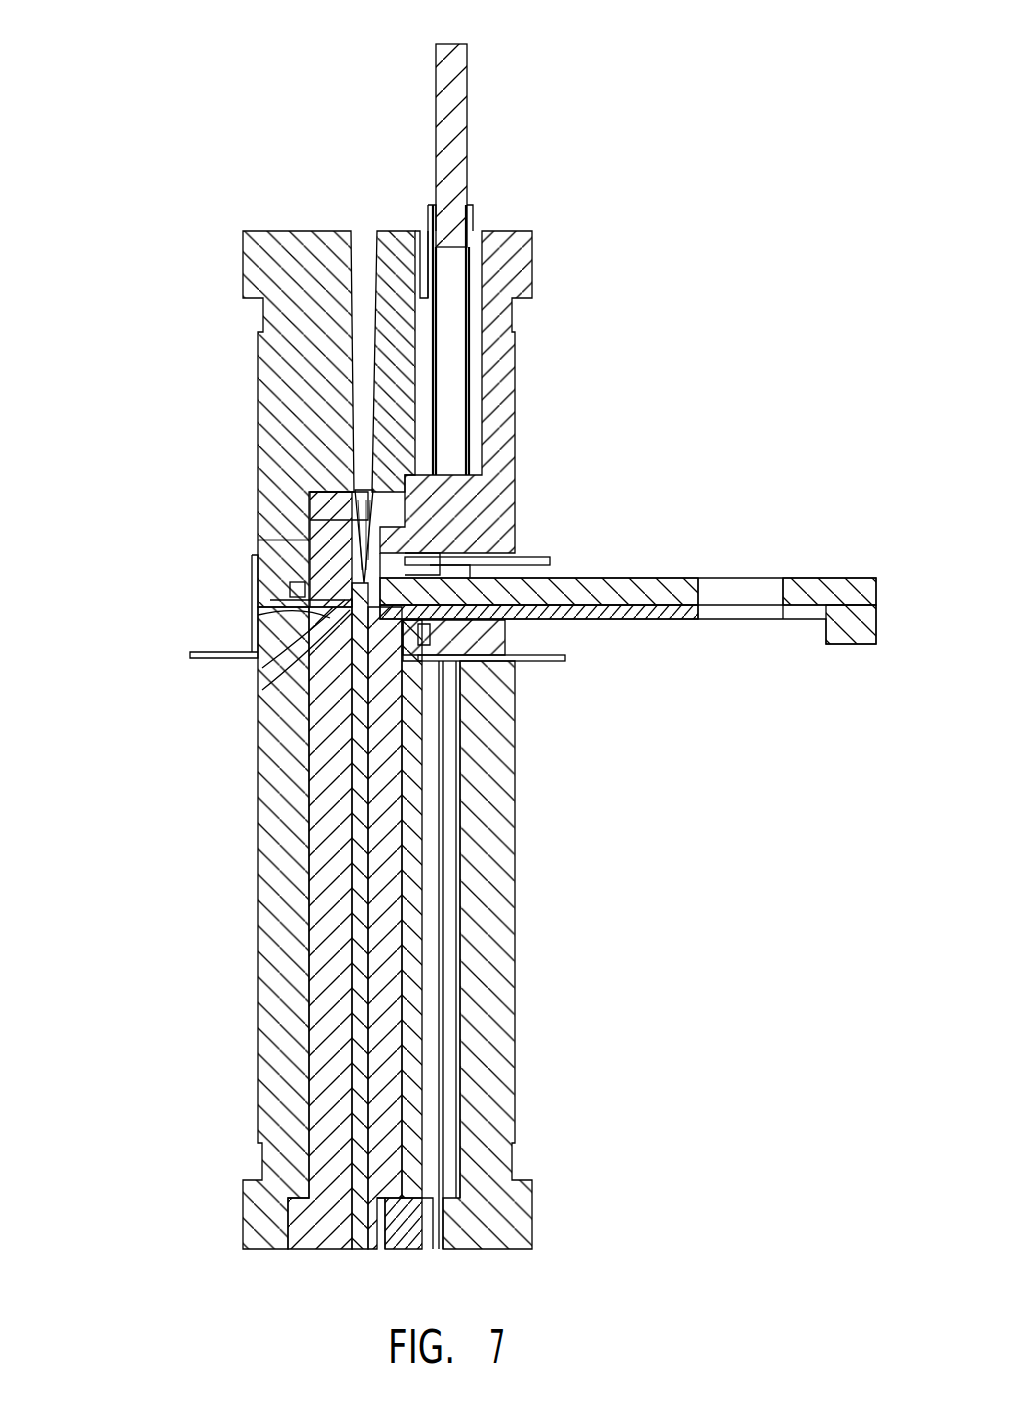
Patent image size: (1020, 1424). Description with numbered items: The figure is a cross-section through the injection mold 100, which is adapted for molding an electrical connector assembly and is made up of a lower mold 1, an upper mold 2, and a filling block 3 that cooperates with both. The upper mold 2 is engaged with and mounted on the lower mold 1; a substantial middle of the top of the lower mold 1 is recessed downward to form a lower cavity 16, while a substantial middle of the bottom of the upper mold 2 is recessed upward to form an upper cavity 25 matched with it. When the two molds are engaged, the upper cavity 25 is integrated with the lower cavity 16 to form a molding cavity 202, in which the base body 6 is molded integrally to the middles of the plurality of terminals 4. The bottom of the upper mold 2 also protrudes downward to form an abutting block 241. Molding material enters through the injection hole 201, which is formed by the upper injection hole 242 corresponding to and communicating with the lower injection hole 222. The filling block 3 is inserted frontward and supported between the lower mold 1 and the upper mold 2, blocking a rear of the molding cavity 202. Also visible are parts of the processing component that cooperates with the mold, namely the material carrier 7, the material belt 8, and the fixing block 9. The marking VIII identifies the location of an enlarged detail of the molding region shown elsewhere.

The injection mold 100 is at (98, 44).
The lower mold 1 is at (290, 1000).
The upper mold 2 is at (298, 376).
The injection hole 201 is at (182, 398).
The upper injection hole 242 is at (357, 437).
The lower injection hole 222 is at (325, 510).
The abutting block 241 is at (266, 540).
The molding cavity 202 is at (144, 612).
The terminals 4 is at (292, 600).
The upper cavity 25 is at (262, 618).
The lower cavity 16 is at (250, 656).
The material carrier 7 is at (262, 668).
The base body 6 is at (340, 650).
The filling block 3 is at (657, 579).
The material belt 8 is at (520, 560).
The fixing block 9 is at (520, 672).
The detail view reference VIII is at (325, 690).